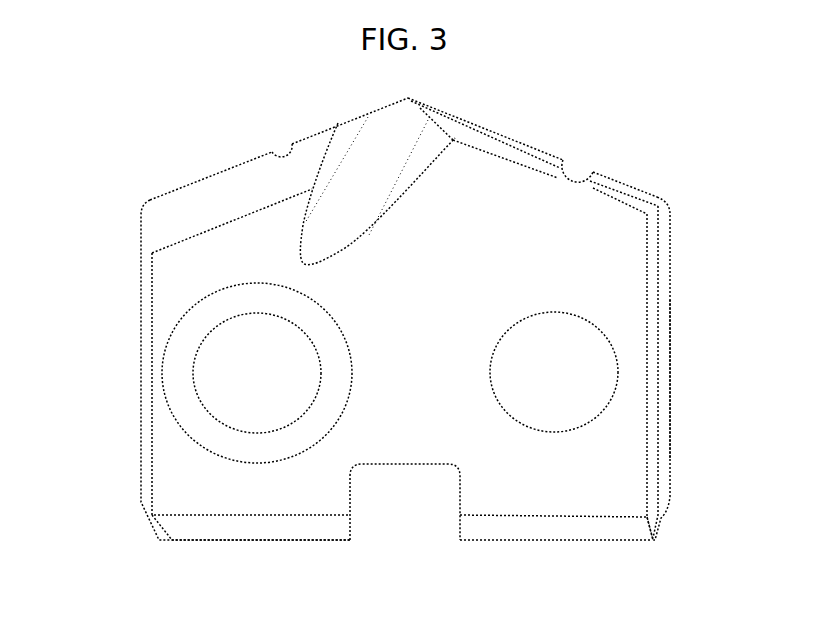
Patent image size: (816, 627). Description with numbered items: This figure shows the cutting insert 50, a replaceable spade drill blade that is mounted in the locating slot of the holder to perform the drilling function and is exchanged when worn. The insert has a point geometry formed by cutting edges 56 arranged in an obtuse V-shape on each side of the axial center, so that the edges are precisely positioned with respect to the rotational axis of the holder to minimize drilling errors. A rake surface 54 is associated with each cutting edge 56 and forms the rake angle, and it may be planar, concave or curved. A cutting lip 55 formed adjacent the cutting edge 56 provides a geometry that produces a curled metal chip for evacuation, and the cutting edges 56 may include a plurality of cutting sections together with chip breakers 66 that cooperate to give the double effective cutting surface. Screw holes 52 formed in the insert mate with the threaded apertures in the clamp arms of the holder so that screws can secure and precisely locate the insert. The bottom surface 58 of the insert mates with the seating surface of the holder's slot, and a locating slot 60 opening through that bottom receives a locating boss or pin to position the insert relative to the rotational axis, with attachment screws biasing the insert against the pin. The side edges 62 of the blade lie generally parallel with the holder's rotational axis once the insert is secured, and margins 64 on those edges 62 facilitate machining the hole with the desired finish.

The cutting insert 50 is at (560, 541).
The screw holes 52 is at (193, 383).
The rake surface 54 is at (213, 200).
The cutting lip 55 is at (180, 220).
The cutting edges 56 is at (307, 135).
The bottom surface 58 is at (237, 540).
The locating slot 60 is at (403, 500).
The side edges 62 is at (650, 522).
The margins 64 is at (660, 390).
The chip breakers 66 is at (278, 147).